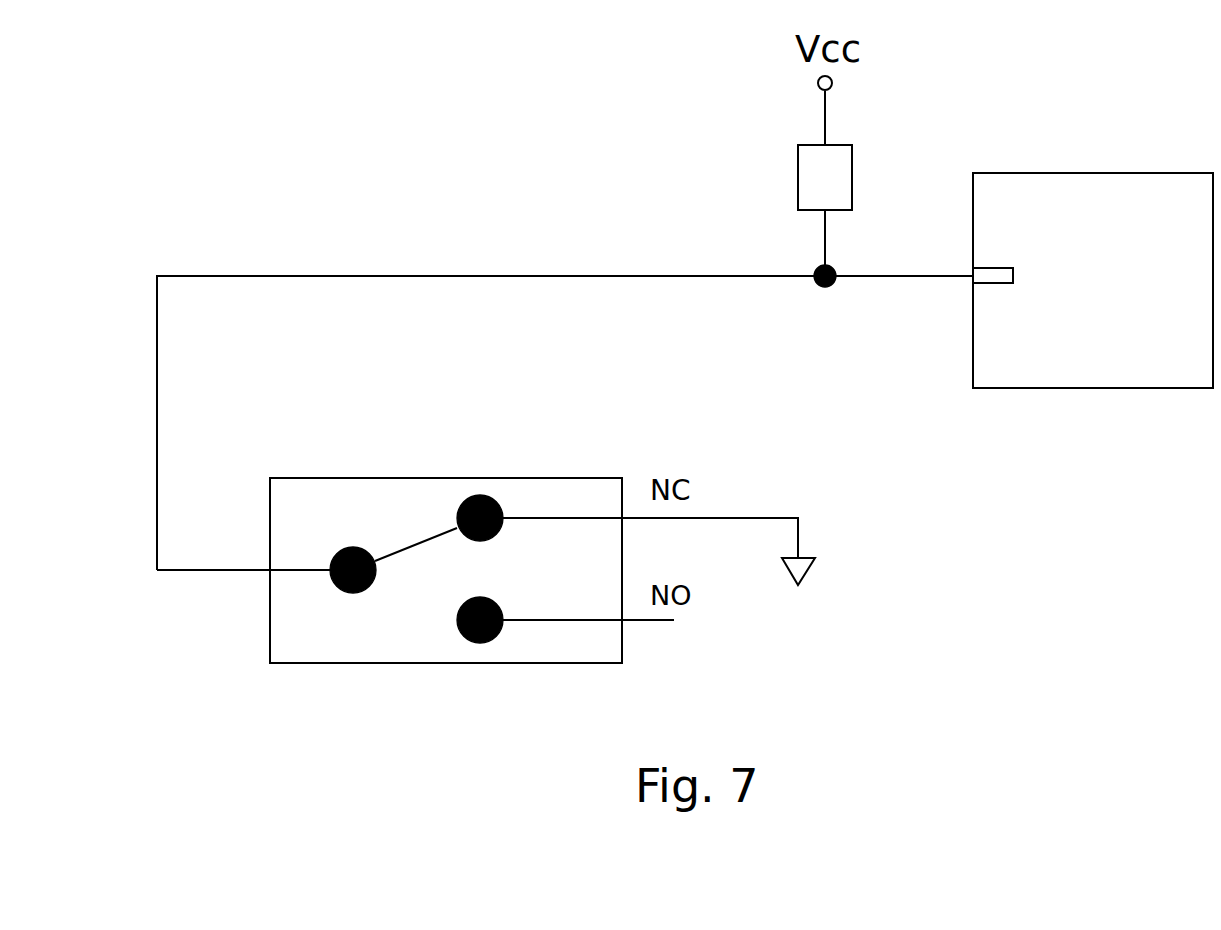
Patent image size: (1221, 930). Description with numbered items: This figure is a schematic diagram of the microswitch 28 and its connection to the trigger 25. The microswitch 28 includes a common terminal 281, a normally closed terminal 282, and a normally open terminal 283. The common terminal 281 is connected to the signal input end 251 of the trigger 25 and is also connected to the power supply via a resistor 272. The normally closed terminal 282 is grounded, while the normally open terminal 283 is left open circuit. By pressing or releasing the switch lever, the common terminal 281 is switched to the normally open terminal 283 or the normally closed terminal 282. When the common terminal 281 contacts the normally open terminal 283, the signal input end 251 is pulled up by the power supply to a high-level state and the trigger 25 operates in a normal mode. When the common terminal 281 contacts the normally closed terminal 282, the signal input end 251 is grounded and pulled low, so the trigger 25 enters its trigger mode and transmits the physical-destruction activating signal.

The trigger 25 is at (1112, 185).
The signal input end 251 is at (992, 275).
The resistor 272 is at (840, 150).
The microswitch 28 is at (310, 500).
The common terminal 281 is at (347, 595).
The normally closed terminal 282 is at (480, 497).
The normally open terminal 283 is at (480, 643).